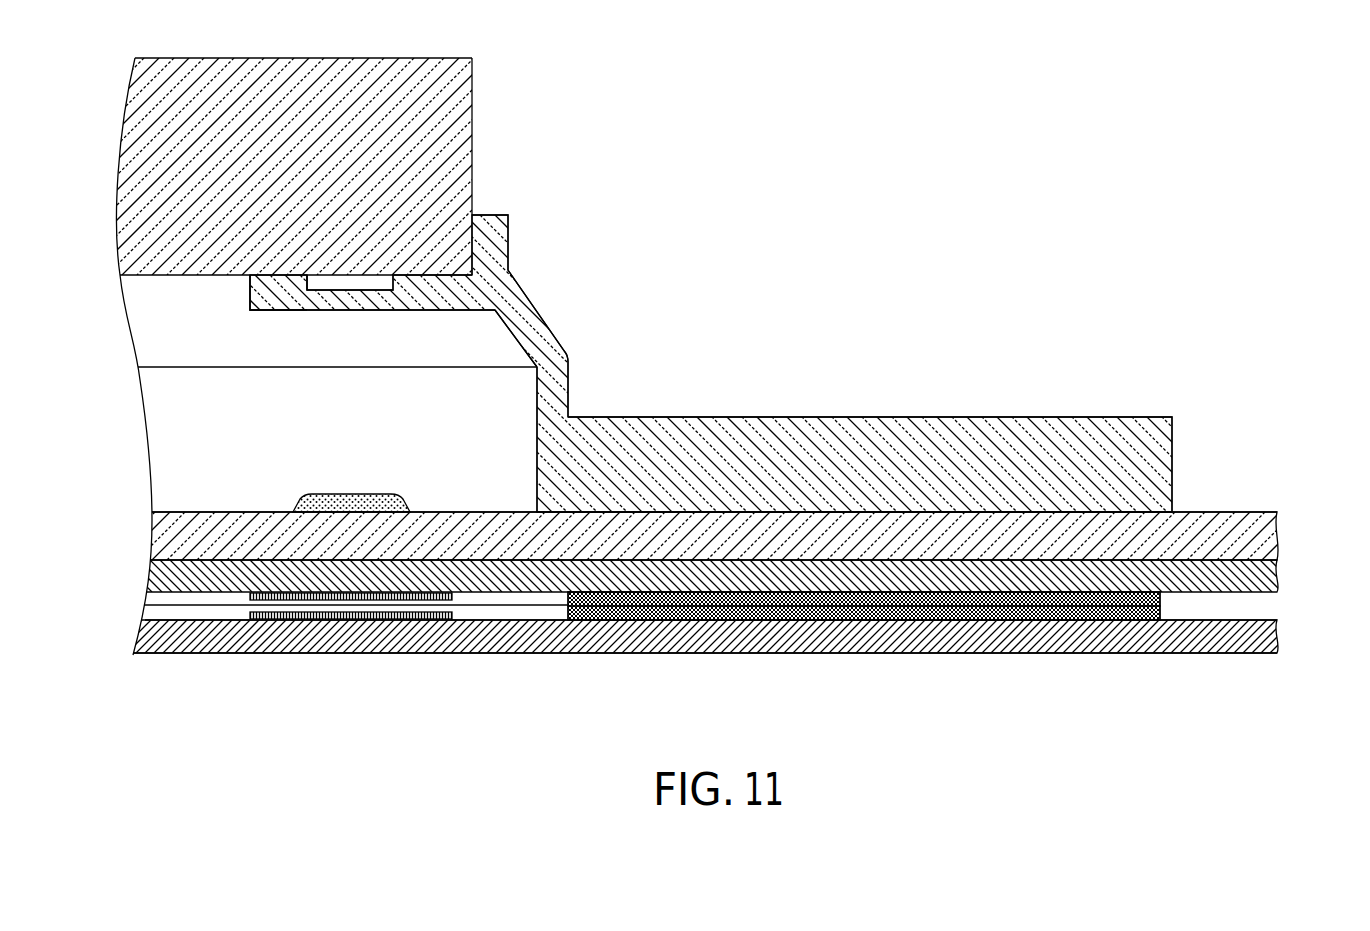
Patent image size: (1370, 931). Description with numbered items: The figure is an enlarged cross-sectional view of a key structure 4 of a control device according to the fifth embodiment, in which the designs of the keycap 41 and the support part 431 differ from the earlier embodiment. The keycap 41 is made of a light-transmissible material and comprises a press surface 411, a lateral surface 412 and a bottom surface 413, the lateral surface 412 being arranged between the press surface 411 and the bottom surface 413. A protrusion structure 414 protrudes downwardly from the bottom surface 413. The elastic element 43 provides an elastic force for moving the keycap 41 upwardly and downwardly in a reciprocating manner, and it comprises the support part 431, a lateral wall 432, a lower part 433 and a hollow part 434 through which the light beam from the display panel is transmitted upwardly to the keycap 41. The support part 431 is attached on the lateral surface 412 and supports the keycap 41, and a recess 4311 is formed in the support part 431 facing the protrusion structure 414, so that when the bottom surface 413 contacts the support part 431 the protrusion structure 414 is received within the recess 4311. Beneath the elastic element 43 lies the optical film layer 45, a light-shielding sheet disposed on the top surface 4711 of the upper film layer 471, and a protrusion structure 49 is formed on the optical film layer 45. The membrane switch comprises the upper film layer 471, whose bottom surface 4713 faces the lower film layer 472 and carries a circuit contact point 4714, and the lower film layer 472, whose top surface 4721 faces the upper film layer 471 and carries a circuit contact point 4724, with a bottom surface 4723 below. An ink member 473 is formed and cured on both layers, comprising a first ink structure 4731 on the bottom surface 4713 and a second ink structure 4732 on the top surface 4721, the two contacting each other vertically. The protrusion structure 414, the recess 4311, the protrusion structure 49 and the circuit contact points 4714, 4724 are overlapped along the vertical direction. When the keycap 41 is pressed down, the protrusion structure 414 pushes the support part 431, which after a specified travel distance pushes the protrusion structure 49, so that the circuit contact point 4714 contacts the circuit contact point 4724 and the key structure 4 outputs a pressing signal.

The key structure 4 is at (1092, 159).
The keycap 41 is at (247, 75).
The press surface 411 is at (365, 58).
The lateral surface 412 is at (473, 147).
The bottom surface 413 is at (225, 275).
The elastic element 43 is at (798, 417).
The support part 431 is at (435, 297).
The recess 4311 is at (300, 290).
The protrusion structure 414 is at (355, 287).
The lateral wall 432 is at (518, 313).
The lower part 433 is at (670, 427).
The hollow part 434 is at (145, 348).
The optical film layer 45 is at (696, 498).
The upper film layer 471 is at (1180, 570).
The top surface 4711 is at (935, 557).
The bottom surface 4713 is at (1240, 597).
The circuit contact point 4714 is at (448, 595).
The lower film layer 472 is at (1178, 637).
The top surface 4721 is at (1213, 618).
The bottom surface 4723 is at (1025, 653).
The circuit contact point 4724 is at (452, 613).
The ink member 473 is at (973, 298).
The first ink structure 4731 is at (958, 672).
The second ink structure 4732 is at (858, 672).
The protrusion structure 49 is at (350, 493).